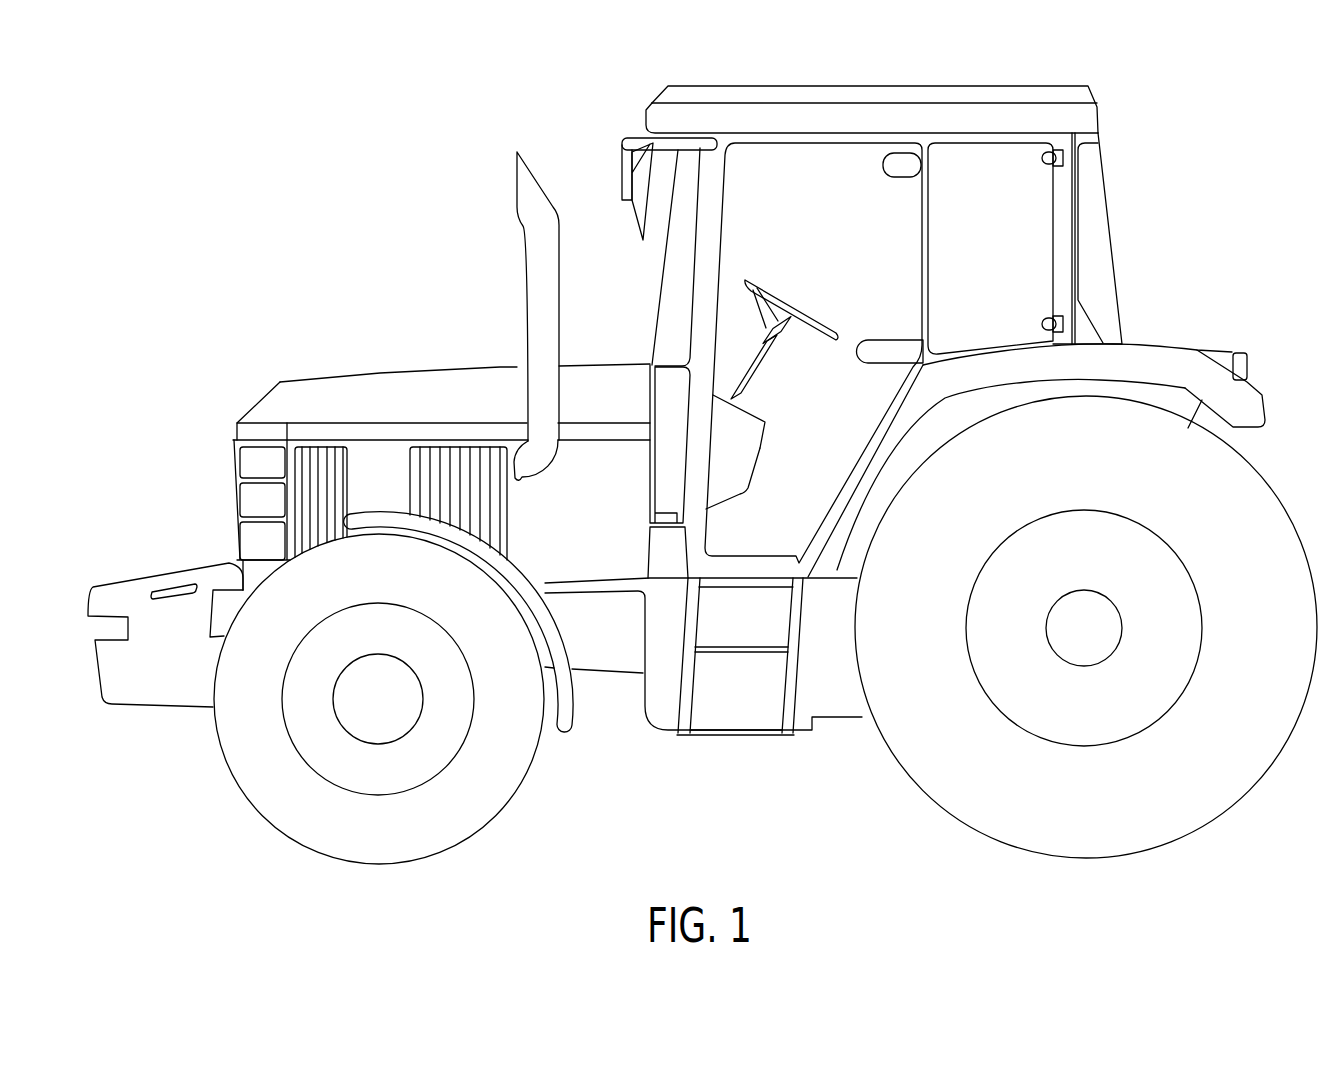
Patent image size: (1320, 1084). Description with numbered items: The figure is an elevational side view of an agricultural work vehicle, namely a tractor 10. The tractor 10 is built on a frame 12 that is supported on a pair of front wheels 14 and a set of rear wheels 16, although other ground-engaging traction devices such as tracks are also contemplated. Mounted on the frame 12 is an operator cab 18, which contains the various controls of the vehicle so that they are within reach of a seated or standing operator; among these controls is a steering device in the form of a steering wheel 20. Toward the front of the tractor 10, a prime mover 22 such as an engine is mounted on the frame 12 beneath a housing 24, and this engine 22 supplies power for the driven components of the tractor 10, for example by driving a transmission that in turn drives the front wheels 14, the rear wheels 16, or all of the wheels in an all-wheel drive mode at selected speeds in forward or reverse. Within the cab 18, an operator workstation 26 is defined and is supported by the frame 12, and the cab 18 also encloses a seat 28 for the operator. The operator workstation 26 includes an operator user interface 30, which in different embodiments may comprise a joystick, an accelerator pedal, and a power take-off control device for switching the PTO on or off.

The tractor 10 is at (1255, 97).
The frame 12 is at (618, 657).
The front wheels 14 is at (467, 813).
The rear wheels 16 is at (1240, 775).
The operator cab 18 is at (1082, 120).
The steering wheel 20 is at (750, 282).
The prime mover 22 is at (424, 440).
The housing 24 is at (278, 362).
The operator workstation 26 is at (738, 457).
The seat 28 is at (1000, 262).
The operator user interface 30 is at (748, 413).